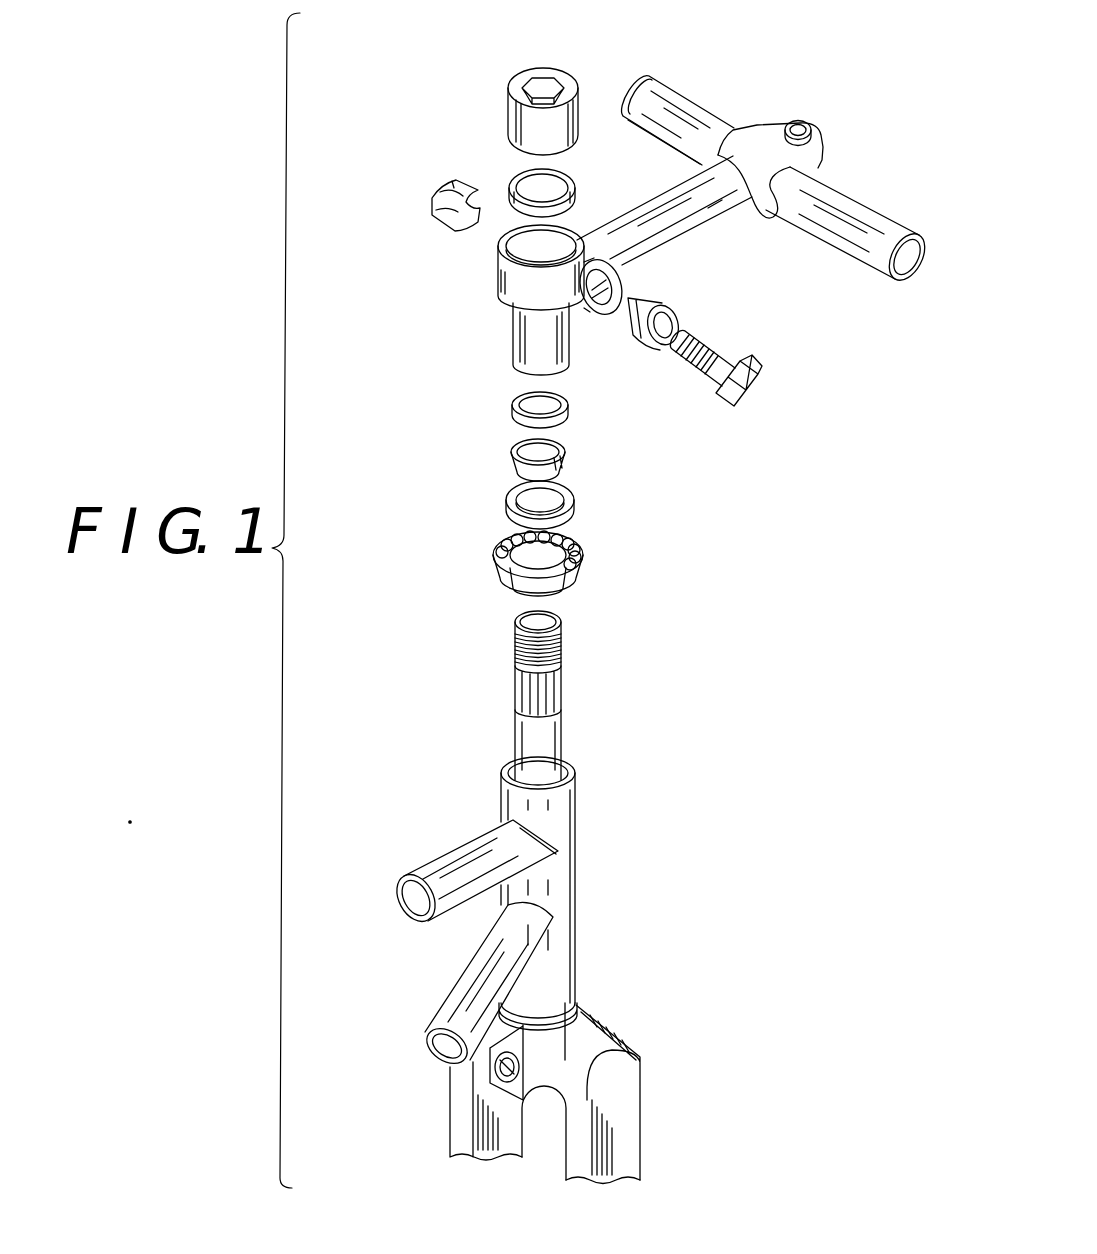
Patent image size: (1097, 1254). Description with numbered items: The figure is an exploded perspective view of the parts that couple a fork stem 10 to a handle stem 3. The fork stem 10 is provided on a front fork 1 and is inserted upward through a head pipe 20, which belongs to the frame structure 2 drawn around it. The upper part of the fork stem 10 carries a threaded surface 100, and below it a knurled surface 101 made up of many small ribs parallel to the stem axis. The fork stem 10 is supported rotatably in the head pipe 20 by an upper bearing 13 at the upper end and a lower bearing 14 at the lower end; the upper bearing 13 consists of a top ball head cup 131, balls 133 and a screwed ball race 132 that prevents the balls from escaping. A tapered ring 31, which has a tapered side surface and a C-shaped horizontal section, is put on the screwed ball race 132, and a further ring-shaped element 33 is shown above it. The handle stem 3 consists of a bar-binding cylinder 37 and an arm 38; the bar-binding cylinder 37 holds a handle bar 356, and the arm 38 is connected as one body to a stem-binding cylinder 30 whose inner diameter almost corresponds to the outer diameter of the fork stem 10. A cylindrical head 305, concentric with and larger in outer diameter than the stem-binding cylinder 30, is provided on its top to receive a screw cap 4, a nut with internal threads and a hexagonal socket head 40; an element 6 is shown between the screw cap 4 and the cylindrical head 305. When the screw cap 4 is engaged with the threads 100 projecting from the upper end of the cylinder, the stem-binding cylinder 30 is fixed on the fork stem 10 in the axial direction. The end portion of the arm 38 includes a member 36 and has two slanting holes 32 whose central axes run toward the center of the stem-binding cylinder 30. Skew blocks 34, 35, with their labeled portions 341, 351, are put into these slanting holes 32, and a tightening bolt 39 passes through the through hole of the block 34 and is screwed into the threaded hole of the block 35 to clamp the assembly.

The front fork 1 is at (570, 1057).
The bicycle frame 2 is at (522, 914).
The handle stem 3 is at (769, 156).
The screw cap 4 is at (548, 80).
The washer ring 6 is at (518, 173).
The fork stem 10 is at (467, 683).
The upper bearing 13 is at (686, 559).
The lower bearing 14 is at (577, 995).
The head pipe 20 is at (577, 880).
The stem-binding cylinder 30 is at (503, 307).
The tapered ring 31 is at (567, 453).
The slanting hole 32 is at (620, 266).
The spacer ring 33 is at (513, 400).
The skew block 34 is at (681, 356).
The skew block 35 is at (405, 181).
The member 36 is at (593, 315).
The bar-binding cylinder 37 is at (765, 138).
The arm 38 is at (733, 217).
The tightening bolt 39 is at (753, 372).
The hexagonal socket head 40 is at (542, 90).
The threaded surface 100 is at (513, 642).
The knurled surface 101 is at (513, 680).
The top ball head cup 131 is at (567, 585).
The screwed ball race 132 is at (570, 505).
The balls 133 is at (578, 537).
The cylindrical head 305 is at (497, 275).
The lug flange 341 is at (637, 322).
The clamp half inner surface 351 is at (452, 218).
The handle bar 356 is at (870, 222).